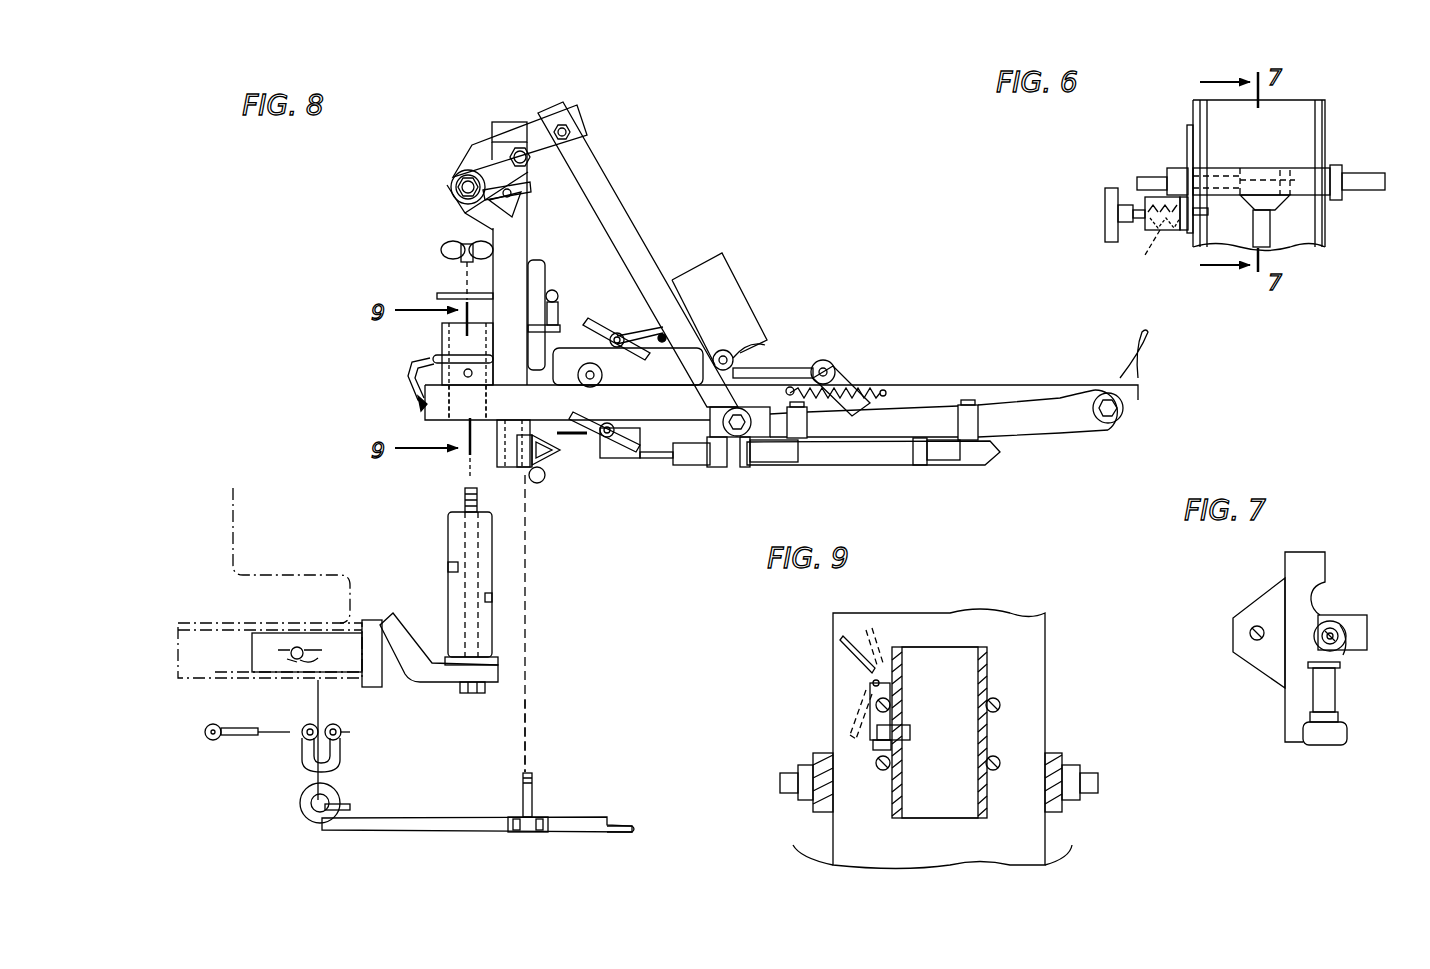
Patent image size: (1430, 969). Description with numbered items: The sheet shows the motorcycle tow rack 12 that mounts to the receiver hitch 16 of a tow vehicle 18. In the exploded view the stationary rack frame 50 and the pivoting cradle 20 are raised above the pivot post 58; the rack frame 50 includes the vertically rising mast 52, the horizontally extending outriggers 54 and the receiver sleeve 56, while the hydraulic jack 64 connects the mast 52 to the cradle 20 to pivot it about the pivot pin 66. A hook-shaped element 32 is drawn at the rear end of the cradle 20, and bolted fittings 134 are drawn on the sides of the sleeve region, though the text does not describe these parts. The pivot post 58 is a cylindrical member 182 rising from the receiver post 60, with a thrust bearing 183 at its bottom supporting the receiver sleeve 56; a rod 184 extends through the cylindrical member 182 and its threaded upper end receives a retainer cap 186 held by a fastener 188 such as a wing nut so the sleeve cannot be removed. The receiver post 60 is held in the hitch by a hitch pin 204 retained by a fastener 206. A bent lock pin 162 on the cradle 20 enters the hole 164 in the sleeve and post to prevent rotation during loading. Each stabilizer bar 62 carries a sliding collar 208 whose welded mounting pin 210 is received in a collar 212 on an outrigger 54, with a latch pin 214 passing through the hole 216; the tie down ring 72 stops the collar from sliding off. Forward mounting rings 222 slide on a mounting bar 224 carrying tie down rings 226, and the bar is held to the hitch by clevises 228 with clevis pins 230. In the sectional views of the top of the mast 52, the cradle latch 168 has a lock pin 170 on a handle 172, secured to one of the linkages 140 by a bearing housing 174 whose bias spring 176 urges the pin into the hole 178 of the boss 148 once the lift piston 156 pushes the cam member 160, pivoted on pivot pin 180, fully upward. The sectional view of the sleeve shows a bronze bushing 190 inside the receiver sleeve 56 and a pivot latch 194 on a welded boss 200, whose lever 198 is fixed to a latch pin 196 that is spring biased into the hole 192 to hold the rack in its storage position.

In FIG. 8, the motorcycle tow rack 12 is at (450, 150).
In FIG. 8, the receiver hitch 16 is at (205, 683).
In FIG. 8, the tow vehicle 18 is at (233, 530).
In FIG. 8, the cradle 20 is at (900, 372).
In FIG. 8, the hook 32 is at (1125, 366).
In FIG. 8, the rack frame 50 is at (540, 236).
In FIG. 8, the mast 52 is at (498, 122).
In FIG. 6, the mast 52 is at (1305, 105).
In FIG. 7, the mast 52 is at (1318, 560).
In FIG. 9, the mast 52 is at (1030, 722).
In FIG. 8, the outriggers 54 is at (545, 460).
In FIG. 9, the outriggers 54 is at (800, 855).
In FIG. 8, the receiver sleeve 56 is at (458, 343).
In FIG. 9, the receiver sleeve 56 is at (985, 675).
In FIG. 8, the pivot post 58 is at (495, 630).
In FIG. 8, the receiver post 60 is at (400, 665).
In FIG. 8, the stabilizer bars 62 is at (415, 832).
In FIG. 7, the hydraulic jack 64 is at (1340, 735).
In FIG. 9, the pivot pin 66 is at (785, 780).
In FIG. 8, the tie down ring 72 is at (622, 835).
In FIG. 9, the washer 134 is at (822, 812).
In FIG. 6, the linkages 140 is at (1180, 170).
In FIG. 7, the linkages 140 is at (1350, 612).
In FIG. 6, the boss 148 is at (1188, 145).
In FIG. 7, the boss 148 is at (1255, 600).
In FIG. 6, the lift piston 156 is at (1268, 225).
In FIG. 7, the lift piston 156 is at (1330, 690).
In FIG. 6, the cam member 160 is at (1290, 168).
In FIG. 7, the cam member 160 is at (1345, 655).
In FIG. 8, the lock pin 162 is at (410, 362).
In FIG. 8, the hole 164 is at (450, 568).
In FIG. 6, the cradle latch 168 is at (1100, 198).
In FIG. 6, the lock pin 170 is at (1140, 185).
In FIG. 6, the handle 172 is at (1110, 228).
In FIG. 6, the bearing housing 174 is at (1150, 222).
In FIG. 6, the bias spring 176 is at (1145, 255).
In FIG. 6, the hole 178 is at (1185, 225).
In FIG. 6, the pivot pin 180 is at (1380, 178).
In FIG. 7, the pivot pin 180 is at (1320, 632).
In FIG. 8, the cylindrical member 182 is at (495, 648).
In FIG. 8, the thrust bearing 183 is at (455, 650).
In FIG. 8, the rod 184 is at (463, 498).
In FIG. 8, the retainer cap 186 is at (440, 293).
In FIG. 8, the fastener 188 is at (455, 245).
In FIG. 9, the bronze bushing 190 is at (978, 655).
In FIG. 8, the hole 192 is at (493, 597).
In FIG. 9, the hole 192 is at (905, 730).
In FIG. 9, the pivot latch 194 is at (858, 685).
In FIG. 9, the latch pin 196 is at (900, 745).
In FIG. 9, the lever 198 is at (845, 648).
In FIG. 9, the boss 200 is at (880, 690).
In FIG. 8, the hitch pin 204 is at (297, 647).
In FIG. 8, the fastener 206 is at (312, 676).
In FIG. 8, the collar 208 is at (520, 832).
In FIG. 8, the mounting pin 210 is at (535, 800).
In FIG. 8, the collar 212 is at (518, 467).
In FIG. 8, the latch pin 214 is at (575, 438).
In FIG. 8, the hole 216 is at (535, 778).
In FIG. 8, the mounting rings 222 is at (305, 815).
In FIG. 8, the mounting bar 224 is at (325, 800).
In FIG. 8, the tie down rings 226 is at (352, 808).
In FIG. 8, the clevises 228 is at (300, 758).
In FIG. 8, the clevis pins 230 is at (220, 740).